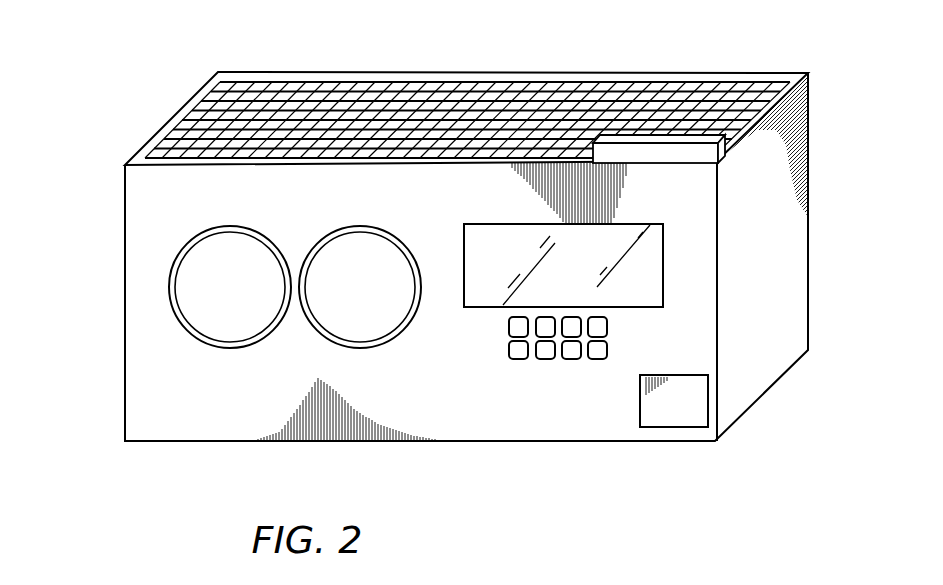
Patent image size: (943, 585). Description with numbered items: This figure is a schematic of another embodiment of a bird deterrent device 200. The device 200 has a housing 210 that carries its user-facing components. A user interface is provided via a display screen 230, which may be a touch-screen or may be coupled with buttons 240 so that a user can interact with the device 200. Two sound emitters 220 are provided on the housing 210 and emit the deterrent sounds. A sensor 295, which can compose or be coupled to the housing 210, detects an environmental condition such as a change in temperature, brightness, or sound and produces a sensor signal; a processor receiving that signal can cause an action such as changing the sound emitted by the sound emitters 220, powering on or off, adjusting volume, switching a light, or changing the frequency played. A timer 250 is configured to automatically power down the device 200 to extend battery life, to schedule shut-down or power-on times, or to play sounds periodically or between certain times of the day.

The device 200 is at (143, 72).
The housing 210 is at (125, 245).
The sound emitter 220 is at (226, 348).
The display screen 230 is at (490, 307).
The buttons 240 is at (519, 359).
The timer 250 is at (670, 427).
The sensor 295 is at (668, 137).